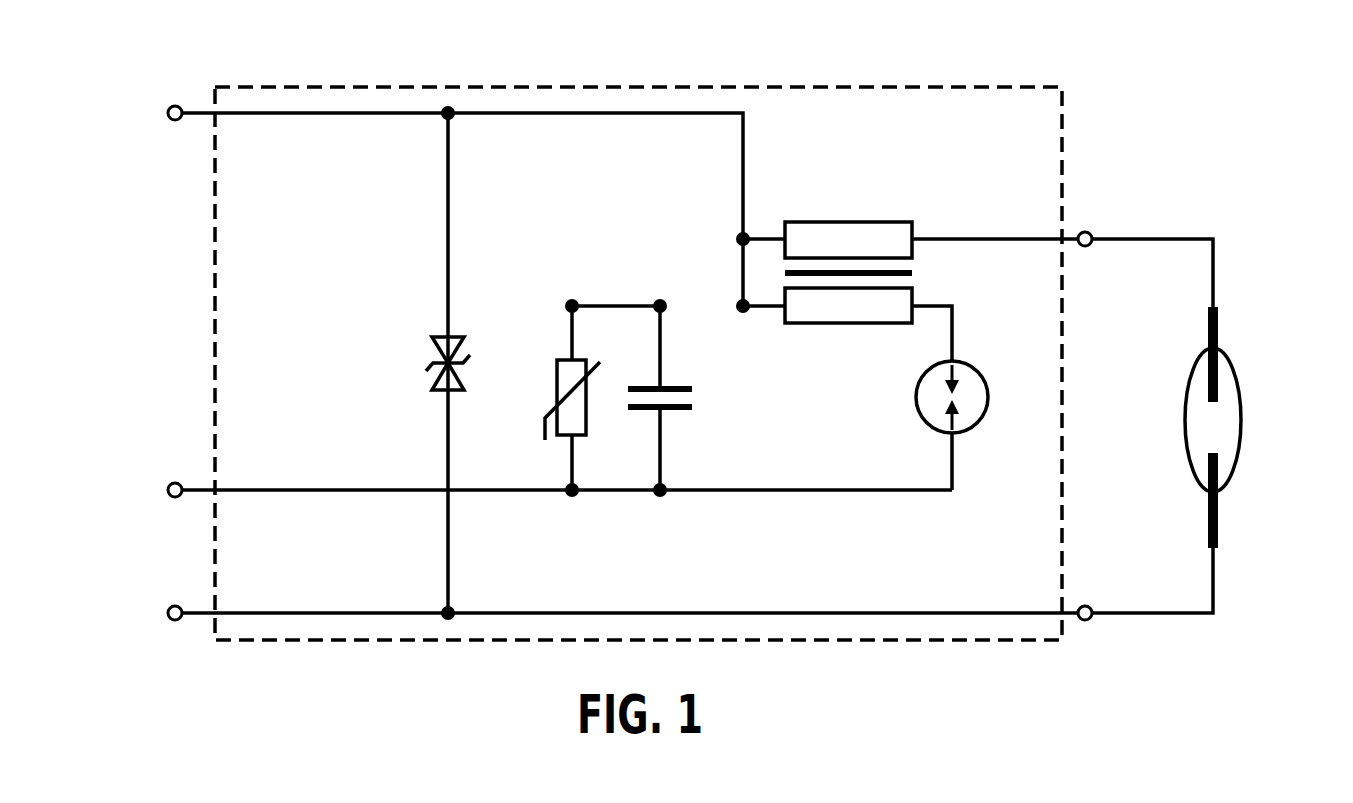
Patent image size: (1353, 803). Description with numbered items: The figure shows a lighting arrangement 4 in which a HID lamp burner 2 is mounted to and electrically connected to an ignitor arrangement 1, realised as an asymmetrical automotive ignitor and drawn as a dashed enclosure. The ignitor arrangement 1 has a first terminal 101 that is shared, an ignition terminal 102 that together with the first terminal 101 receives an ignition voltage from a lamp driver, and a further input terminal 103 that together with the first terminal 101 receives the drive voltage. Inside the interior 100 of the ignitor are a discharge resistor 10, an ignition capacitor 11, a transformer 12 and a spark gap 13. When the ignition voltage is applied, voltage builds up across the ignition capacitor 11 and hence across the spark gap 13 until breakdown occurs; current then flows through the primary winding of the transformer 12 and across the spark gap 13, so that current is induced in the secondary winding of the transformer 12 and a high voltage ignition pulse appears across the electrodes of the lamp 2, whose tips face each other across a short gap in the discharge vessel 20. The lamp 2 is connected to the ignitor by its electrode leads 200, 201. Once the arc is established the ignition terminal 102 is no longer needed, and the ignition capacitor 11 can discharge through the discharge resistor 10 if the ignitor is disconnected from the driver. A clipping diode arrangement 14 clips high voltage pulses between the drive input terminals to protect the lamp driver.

The ignitor arrangement 1 is at (1042, 88).
The HID lamp burner 2 is at (1245, 380).
The lighting arrangement 4 is at (1183, 146).
The discharge resistor 10 is at (557, 360).
The ignition capacitor 11 is at (692, 388).
The transformer 12 is at (855, 222).
The spark gap 13 is at (980, 370).
The clipping diode arrangement 14 is at (433, 371).
The discharge vessel 20 is at (1232, 470).
The interior 100 is at (820, 437).
The first terminal 101 is at (167, 113).
The ignition terminal 102 is at (167, 490).
The input terminal 103 is at (167, 613).
The electrode lead 200 is at (1185, 240).
The electrode lead 201 is at (1185, 613).